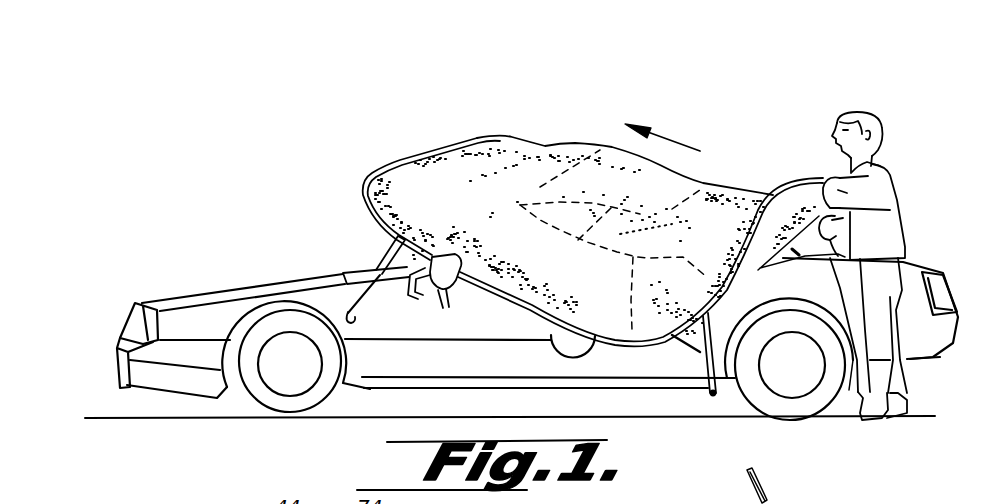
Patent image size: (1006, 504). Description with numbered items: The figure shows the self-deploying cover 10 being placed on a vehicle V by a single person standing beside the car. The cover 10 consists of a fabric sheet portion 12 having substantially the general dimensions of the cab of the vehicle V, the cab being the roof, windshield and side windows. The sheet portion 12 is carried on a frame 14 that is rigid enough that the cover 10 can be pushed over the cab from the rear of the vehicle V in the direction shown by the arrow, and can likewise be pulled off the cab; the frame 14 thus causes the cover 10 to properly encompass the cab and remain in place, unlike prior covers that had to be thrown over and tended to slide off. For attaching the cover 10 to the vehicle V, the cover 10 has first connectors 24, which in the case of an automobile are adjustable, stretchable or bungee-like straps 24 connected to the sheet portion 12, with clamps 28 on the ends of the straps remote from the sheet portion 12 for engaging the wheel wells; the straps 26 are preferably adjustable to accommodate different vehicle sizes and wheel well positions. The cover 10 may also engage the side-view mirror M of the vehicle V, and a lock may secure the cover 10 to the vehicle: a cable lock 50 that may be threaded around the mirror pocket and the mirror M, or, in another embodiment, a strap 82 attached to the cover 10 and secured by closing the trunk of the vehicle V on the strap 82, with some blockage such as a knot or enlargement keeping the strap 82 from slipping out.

The self-deploying cover 10 is at (731, 174).
The fabric sheet portion 12 is at (493, 157).
The frame 14 is at (385, 167).
The first connectors 24 is at (357, 262).
The straps 26 is at (674, 350).
The clamps 28 is at (372, 276).
The cable lock 50 is at (440, 297).
The strap 82 is at (852, 360).
The side-view mirror M is at (442, 262).
The vehicle V is at (223, 291).